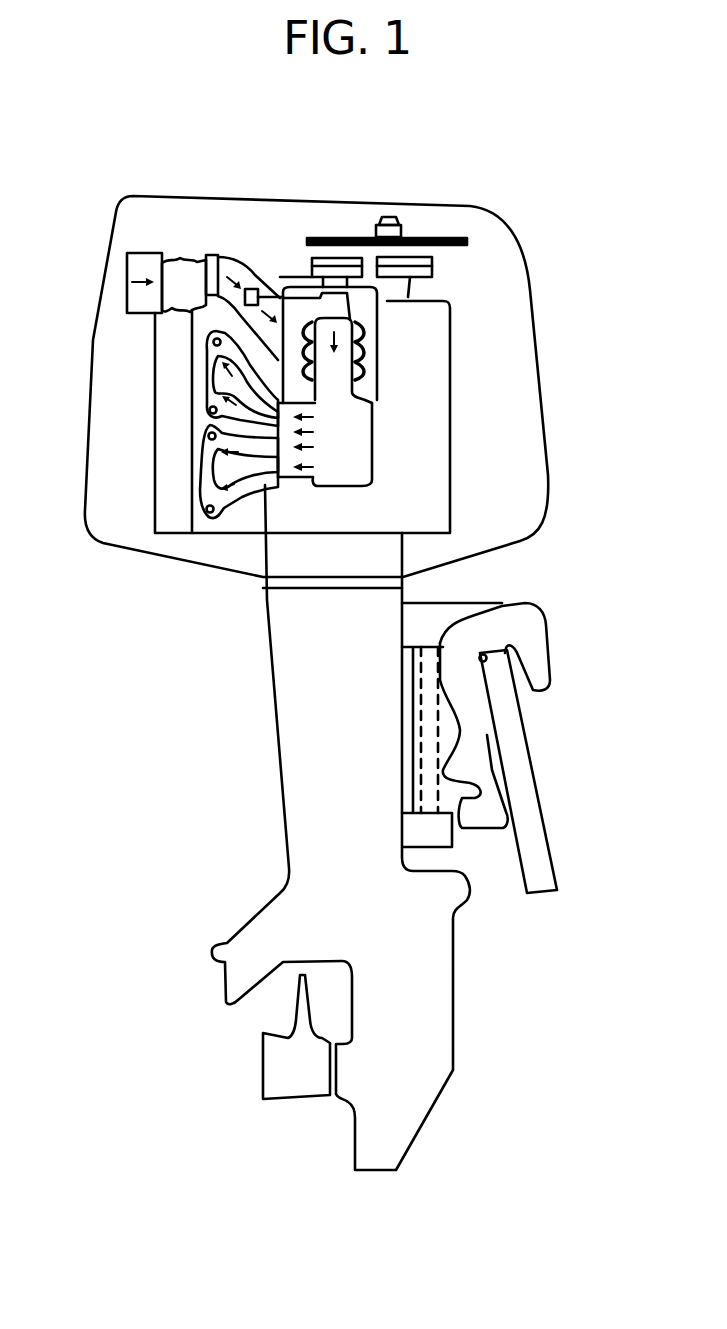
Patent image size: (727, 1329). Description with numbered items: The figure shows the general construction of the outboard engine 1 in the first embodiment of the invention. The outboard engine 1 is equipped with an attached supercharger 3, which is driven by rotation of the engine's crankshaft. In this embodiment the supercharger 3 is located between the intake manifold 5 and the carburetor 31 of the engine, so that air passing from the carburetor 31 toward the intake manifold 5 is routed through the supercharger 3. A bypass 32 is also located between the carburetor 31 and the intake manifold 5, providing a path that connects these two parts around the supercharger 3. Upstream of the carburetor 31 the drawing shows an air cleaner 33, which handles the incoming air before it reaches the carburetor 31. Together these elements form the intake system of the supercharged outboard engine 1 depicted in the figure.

The outboard engine 1 is at (440, 453).
The supercharger 3 is at (370, 313).
The intake manifold 5 is at (343, 477).
The carburetor 31 is at (180, 258).
The bypass 32 is at (277, 295).
The air cleaner 33 is at (133, 298).